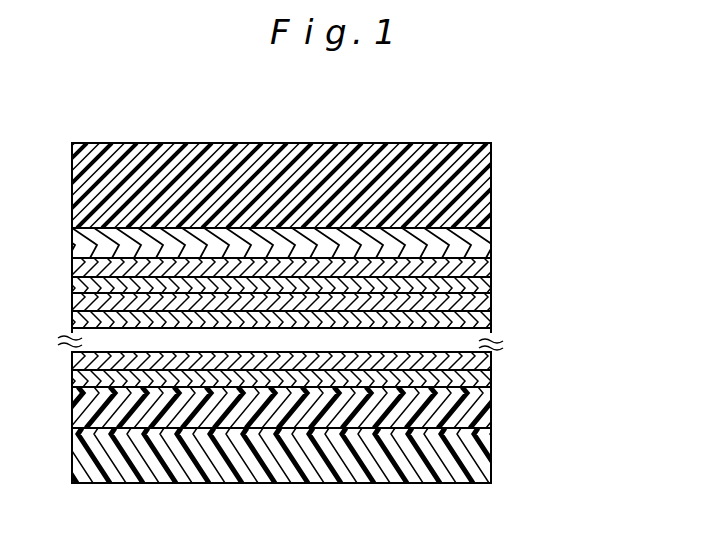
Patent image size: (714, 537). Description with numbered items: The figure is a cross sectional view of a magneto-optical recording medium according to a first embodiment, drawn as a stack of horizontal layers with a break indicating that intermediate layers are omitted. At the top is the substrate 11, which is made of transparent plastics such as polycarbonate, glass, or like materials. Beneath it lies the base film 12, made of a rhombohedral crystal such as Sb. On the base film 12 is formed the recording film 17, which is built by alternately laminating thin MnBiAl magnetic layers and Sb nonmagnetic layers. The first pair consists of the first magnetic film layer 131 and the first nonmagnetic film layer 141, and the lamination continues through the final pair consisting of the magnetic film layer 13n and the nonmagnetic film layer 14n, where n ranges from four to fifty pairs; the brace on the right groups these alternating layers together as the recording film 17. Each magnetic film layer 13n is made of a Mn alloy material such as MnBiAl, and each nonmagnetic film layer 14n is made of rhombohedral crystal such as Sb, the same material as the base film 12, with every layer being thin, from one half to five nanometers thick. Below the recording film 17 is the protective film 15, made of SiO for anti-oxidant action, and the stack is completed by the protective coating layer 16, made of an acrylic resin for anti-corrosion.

The substrate 11 is at (491, 173).
The base film 12 is at (482, 243).
The first magnetic film layer 131 is at (491, 268).
The first nonmagnetic film layer 141 is at (491, 296).
The magnetic film layer 13n is at (486, 363).
The nonmagnetic film layer 14n is at (487, 385).
The protective film 15 is at (491, 416).
The protective coating layer 16 is at (491, 462).
The recording film 17 is at (600, 388).